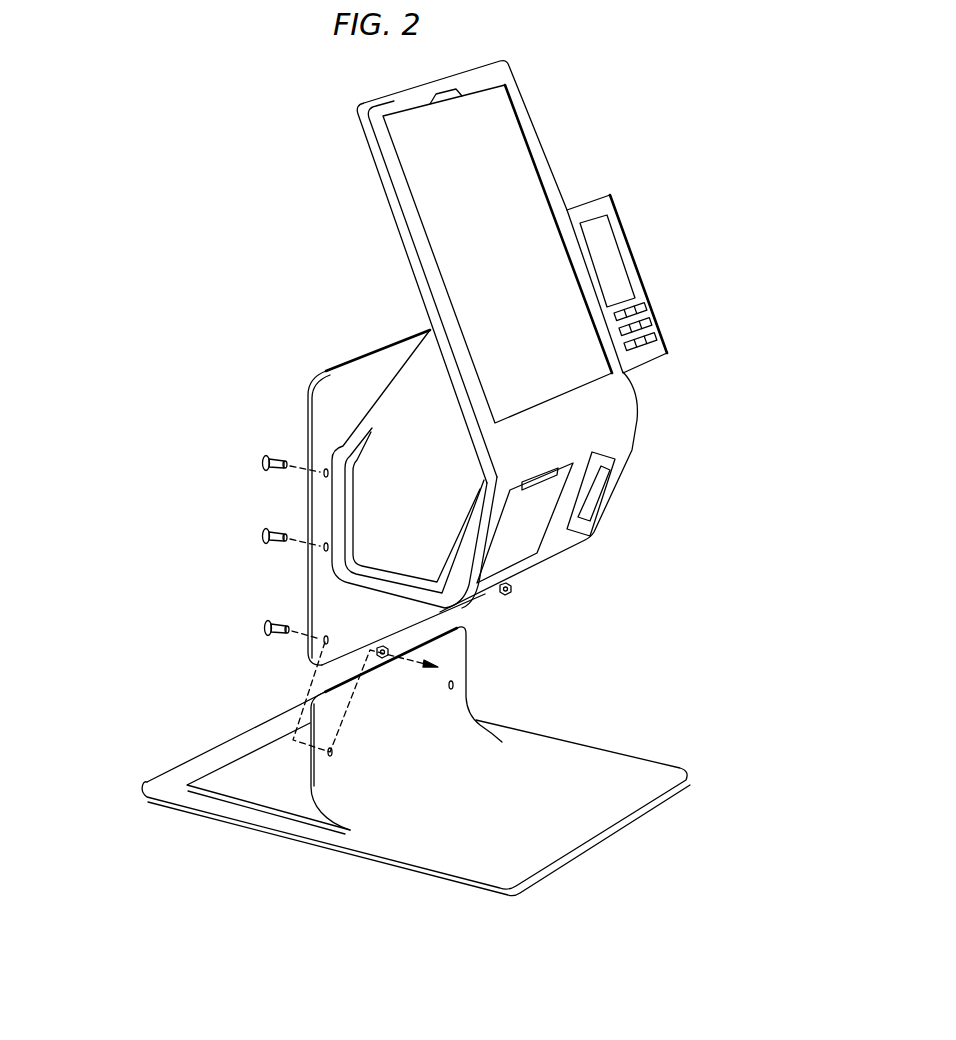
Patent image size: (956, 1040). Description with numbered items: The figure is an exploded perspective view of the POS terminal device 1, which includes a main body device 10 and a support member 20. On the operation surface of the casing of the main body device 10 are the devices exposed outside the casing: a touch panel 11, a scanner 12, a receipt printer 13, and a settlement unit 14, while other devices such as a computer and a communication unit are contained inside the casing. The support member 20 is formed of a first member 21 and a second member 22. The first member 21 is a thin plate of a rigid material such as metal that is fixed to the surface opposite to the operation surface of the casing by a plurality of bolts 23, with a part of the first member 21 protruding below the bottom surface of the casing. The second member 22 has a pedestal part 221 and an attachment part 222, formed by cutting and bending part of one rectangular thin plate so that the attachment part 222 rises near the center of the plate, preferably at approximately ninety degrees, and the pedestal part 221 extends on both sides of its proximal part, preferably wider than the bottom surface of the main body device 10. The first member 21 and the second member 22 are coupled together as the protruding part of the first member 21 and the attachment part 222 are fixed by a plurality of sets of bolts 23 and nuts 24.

The POS terminal device 1 is at (199, 181).
The main body device 10 is at (619, 152).
The touch panel 11 is at (513, 121).
The scanner 12 is at (587, 497).
The receipt printer 13 is at (540, 528).
The settlement unit 14 is at (640, 299).
The support member 20 is at (119, 545).
The first member 21 is at (318, 412).
The second member 22 is at (382, 908).
The pedestal part 221 is at (382, 847).
The attachment part 222 is at (307, 797).
The bolts 23 is at (262, 464).
The nuts 24 is at (507, 594).